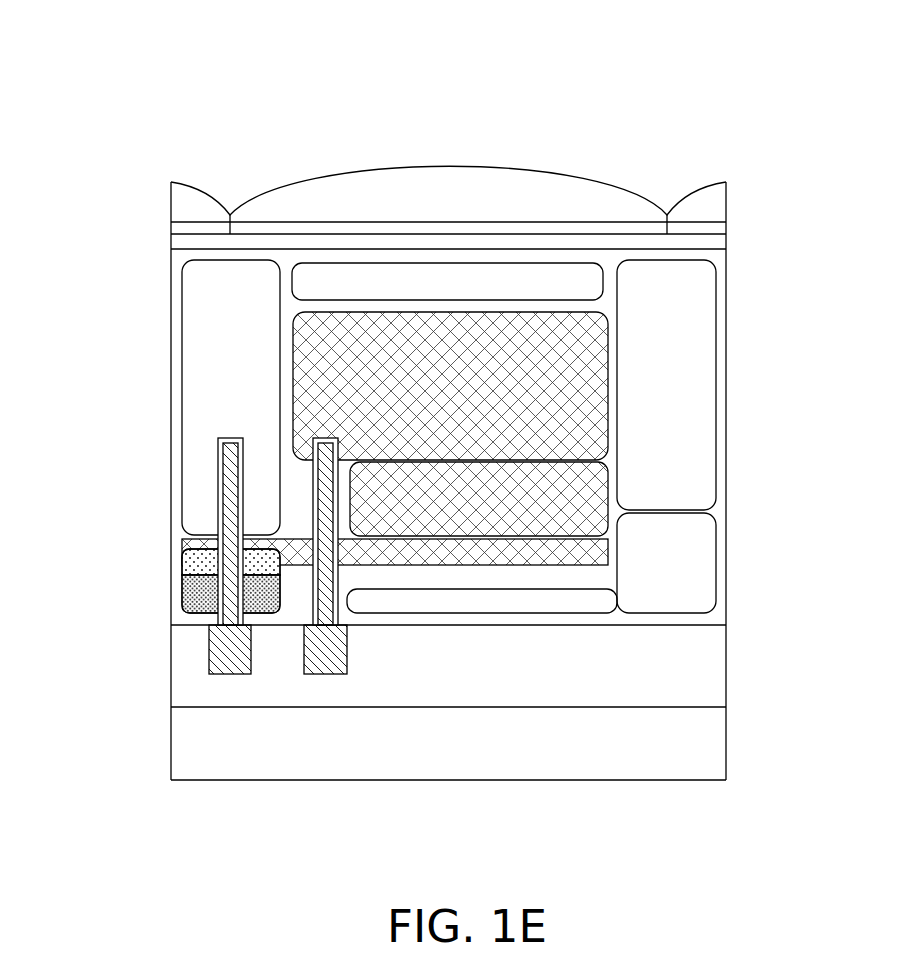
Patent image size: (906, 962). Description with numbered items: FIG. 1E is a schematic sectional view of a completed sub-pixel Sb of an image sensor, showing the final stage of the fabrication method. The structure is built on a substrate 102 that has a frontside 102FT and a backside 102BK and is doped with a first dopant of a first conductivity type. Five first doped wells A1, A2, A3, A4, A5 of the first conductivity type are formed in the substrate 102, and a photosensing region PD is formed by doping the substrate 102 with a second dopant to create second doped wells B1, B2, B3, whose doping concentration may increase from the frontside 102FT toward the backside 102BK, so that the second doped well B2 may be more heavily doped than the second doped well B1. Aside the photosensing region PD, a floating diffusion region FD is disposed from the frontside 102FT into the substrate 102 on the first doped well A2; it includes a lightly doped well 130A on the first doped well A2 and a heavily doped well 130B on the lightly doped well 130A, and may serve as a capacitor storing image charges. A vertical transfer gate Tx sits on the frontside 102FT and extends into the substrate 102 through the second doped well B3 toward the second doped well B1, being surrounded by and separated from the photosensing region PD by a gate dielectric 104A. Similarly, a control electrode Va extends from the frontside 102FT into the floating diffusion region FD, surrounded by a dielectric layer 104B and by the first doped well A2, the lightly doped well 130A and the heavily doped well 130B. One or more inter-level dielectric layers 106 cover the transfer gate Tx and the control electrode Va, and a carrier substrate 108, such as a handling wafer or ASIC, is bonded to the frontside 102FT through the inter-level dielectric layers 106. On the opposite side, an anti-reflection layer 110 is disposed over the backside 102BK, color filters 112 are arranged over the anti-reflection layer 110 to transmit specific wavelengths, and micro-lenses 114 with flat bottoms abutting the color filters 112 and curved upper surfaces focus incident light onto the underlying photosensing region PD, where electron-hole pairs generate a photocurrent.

The photosensing region PD is at (98, 7).
The second doped well B1 is at (363, 360).
The second doped well B2 is at (484, 503).
The second doped well B3 is at (540, 545).
The first doped well A1 is at (427, 280).
The first doped well A2 is at (208, 353).
The first doped well A3 is at (690, 372).
The first doped well A4 is at (690, 562).
The first doped well A5 is at (467, 600).
The micro-lens 114 is at (617, 207).
The color filter 112 is at (732, 222).
The anti-reflection layer 110 is at (708, 243).
The backside 102BK is at (203, 249).
The substrate 102 is at (180, 288).
The gate dielectric 104A is at (325, 440).
The dielectric layer 104B is at (220, 476).
The floating diffusion region FD is at (68, 543).
The lightly doped well 130A is at (195, 563).
The heavily doped well 130B is at (195, 593).
The frontside 102FT is at (189, 625).
The inter-level dielectric layer 106 is at (690, 665).
The carrier substrate 108 is at (690, 742).
The control electrode Va is at (228, 650).
The transfer gate Tx is at (323, 650).
The sub-pixel Sb is at (790, 857).